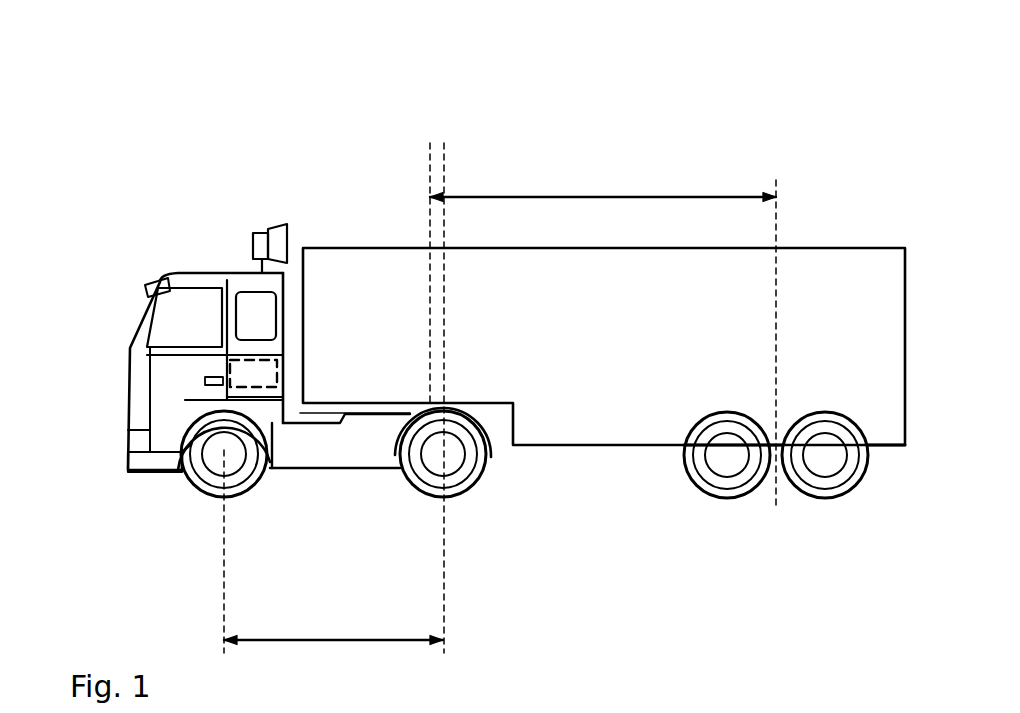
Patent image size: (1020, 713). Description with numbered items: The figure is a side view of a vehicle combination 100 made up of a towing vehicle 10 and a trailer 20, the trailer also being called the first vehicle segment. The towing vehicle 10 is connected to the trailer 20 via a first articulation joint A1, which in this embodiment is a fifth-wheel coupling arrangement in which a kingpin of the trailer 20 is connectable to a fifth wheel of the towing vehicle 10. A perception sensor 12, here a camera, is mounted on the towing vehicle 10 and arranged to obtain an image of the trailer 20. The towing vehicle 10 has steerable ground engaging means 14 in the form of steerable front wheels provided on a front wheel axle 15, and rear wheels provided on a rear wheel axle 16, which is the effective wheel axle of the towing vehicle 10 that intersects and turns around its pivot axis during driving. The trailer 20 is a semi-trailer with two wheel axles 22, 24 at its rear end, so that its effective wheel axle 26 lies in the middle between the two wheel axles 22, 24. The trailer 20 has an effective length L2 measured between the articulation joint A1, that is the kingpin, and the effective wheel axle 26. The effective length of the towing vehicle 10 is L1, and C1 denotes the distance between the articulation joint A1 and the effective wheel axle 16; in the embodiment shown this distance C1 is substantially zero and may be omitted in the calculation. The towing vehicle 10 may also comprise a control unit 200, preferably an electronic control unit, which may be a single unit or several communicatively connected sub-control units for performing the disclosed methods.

The vehicle combination 100 is at (355, 180).
The towing vehicle 10 is at (108, 283).
The perception sensor 12 is at (253, 250).
The control unit 200 is at (233, 372).
The steerable ground engaging means 14 is at (247, 490).
The front wheel axle 15 is at (224, 542).
The rear wheel axle 16 is at (463, 490).
The trailer 20 is at (828, 230).
The wheel axle 22 is at (727, 498).
The wheel axle 24 is at (813, 498).
The effective wheel axle 26 is at (787, 398).
The first articulation joint A1 is at (412, 385).
The distance between the articulation joint and the effective wheel axle C1 is at (437, 127).
The effective length of the towing vehicle L1 is at (333, 667).
The effective length L2 is at (603, 177).